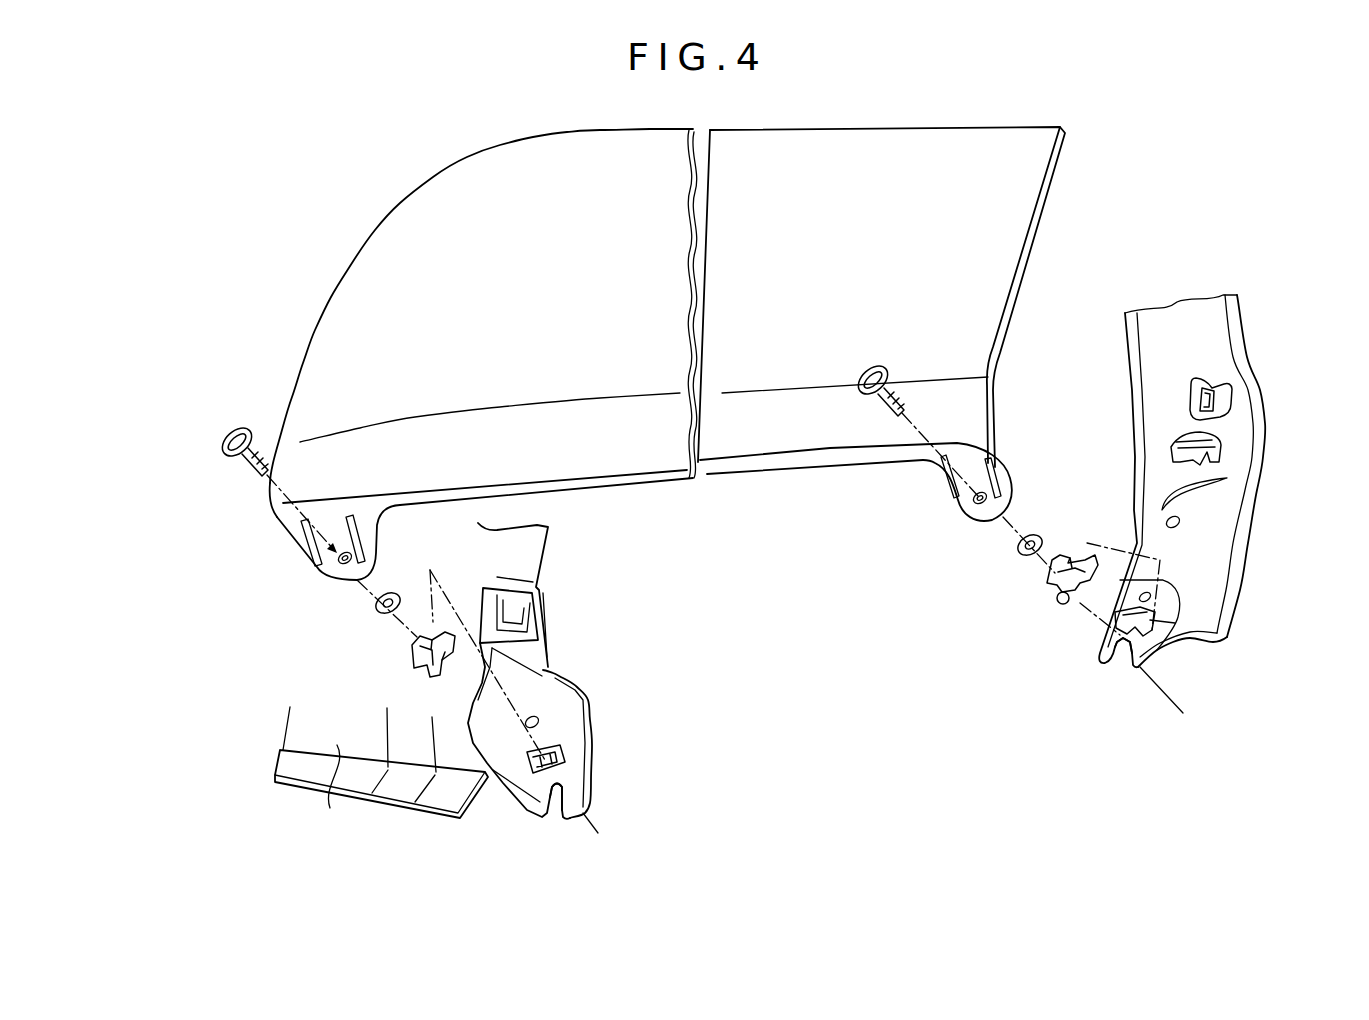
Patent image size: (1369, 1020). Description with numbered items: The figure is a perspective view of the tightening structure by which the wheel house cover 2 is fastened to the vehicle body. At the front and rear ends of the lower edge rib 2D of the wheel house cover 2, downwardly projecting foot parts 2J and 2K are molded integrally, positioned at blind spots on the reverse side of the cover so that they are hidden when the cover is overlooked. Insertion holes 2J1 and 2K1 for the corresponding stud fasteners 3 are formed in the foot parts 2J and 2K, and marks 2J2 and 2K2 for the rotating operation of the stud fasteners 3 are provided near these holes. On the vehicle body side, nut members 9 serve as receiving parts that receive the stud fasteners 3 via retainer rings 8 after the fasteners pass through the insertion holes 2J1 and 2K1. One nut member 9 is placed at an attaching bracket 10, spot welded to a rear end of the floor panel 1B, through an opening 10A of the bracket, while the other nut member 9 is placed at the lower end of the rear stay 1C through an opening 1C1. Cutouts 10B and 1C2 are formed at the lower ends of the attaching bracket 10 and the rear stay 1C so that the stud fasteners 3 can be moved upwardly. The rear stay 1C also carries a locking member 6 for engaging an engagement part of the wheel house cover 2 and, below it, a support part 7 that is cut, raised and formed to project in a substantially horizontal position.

The wheel house cover 2 is at (623, 393).
The lower edge rib 2D is at (635, 480).
The foot part 2J is at (291, 582).
The insertion hole 2J1 is at (320, 573).
The mark 2J2 is at (335, 556).
The foot part 2K is at (856, 520).
The insertion hole 2K1 is at (960, 515).
The mark 2K2 is at (953, 483).
The stud fastener 3 is at (222, 438).
The retainer ring 8 is at (397, 597).
The nut member 9 is at (417, 657).
The attaching bracket 10 is at (579, 701).
The opening 10A is at (560, 767).
The cutout 10B is at (552, 817).
The floor panel 1B is at (381, 773).
The rear stay 1C is at (1185, 510).
The locking member 6 is at (1210, 397).
The support part 7 is at (1217, 445).
The opening 1C1 is at (1152, 635).
The cutout 1C2 is at (1125, 652).